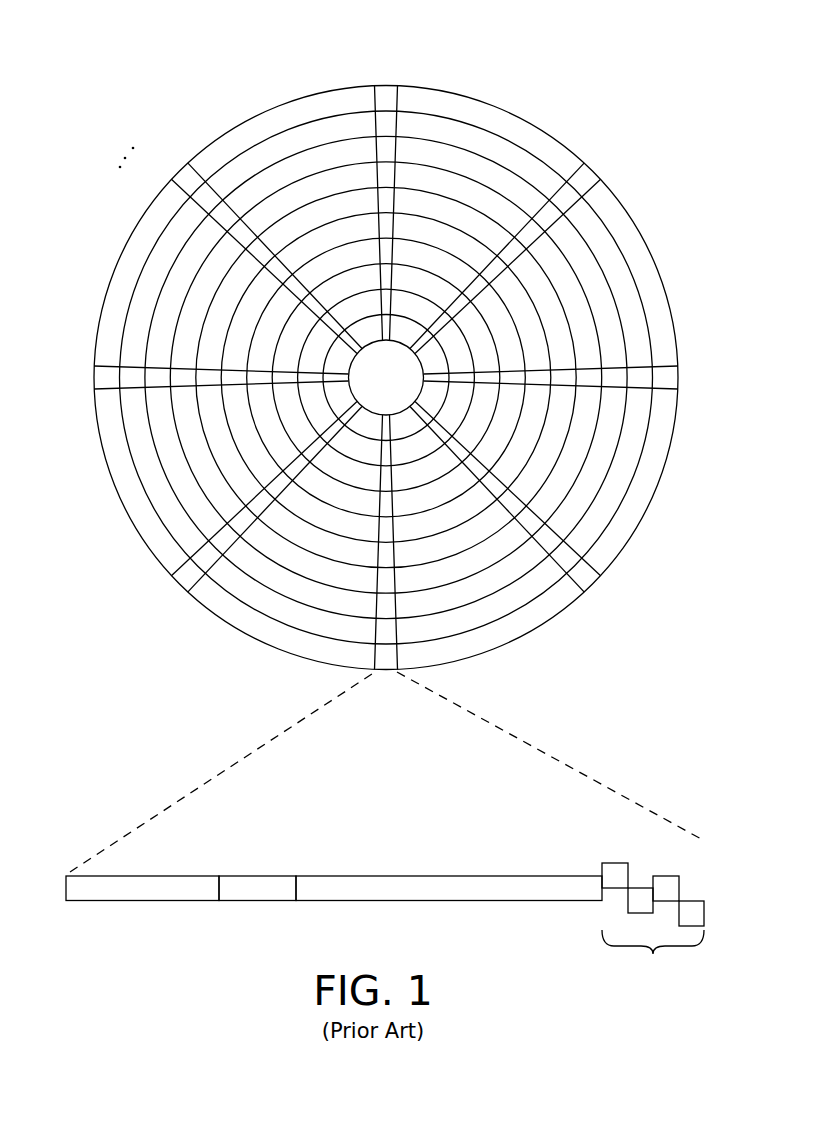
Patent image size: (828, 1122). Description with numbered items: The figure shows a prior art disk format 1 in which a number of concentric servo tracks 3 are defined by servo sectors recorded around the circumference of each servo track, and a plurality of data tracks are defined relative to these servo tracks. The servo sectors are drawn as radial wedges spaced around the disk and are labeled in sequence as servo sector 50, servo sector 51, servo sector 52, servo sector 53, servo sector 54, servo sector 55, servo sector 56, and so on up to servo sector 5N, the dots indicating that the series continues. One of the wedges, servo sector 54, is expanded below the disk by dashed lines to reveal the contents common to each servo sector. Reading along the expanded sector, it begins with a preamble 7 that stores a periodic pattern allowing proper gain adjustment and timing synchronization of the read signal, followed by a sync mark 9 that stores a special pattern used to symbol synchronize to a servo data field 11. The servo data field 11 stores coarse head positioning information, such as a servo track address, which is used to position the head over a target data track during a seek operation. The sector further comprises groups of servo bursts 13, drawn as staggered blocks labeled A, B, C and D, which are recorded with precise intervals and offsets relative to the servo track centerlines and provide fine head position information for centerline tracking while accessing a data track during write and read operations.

The disk format 1 is at (386, 354).
The servo track 3 is at (487, 143).
The servo sector 50 is at (387, 92).
The servo sector 51 is at (587, 177).
The servo sector 52 is at (672, 378).
The servo sector 53 is at (585, 580).
The servo sector 54 is at (256, 741).
The servo sector 55 is at (182, 580).
The servo sector 56 is at (97, 377).
The servo sector 5N is at (180, 173).
The preamble 7 is at (125, 902).
The sync mark 9 is at (255, 902).
The servo data field 11 is at (438, 895).
The servo bursts 13 is at (592, 848).